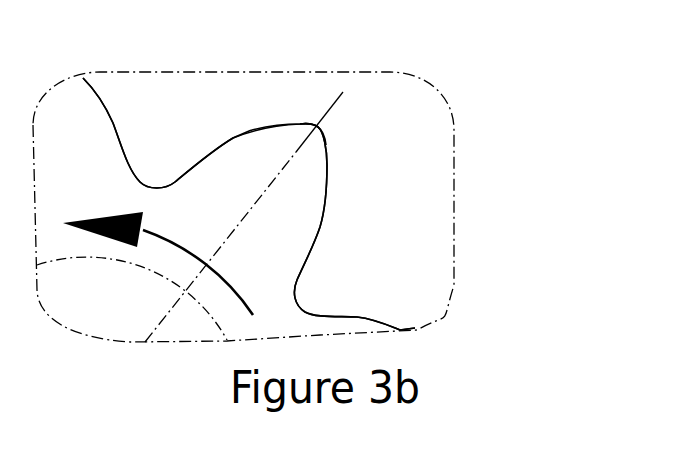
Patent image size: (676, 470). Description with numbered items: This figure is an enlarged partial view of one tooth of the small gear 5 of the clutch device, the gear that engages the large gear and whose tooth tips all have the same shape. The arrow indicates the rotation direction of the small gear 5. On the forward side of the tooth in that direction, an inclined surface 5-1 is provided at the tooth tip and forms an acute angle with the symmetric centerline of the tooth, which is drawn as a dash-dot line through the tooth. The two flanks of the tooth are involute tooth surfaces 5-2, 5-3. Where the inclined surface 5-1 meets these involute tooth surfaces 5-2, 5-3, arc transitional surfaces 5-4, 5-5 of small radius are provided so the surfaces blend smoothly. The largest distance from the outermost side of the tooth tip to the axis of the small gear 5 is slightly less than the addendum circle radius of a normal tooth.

The small gear 5 is at (290, 217).
The inclined surface 5-1 is at (318, 127).
The involute tooth surface 5-2 is at (246, 141).
The involute tooth surface 5-3 is at (327, 165).
The arc transitional surface 5-4 is at (290, 123).
The arc transitional surface 5-5 is at (321, 127).